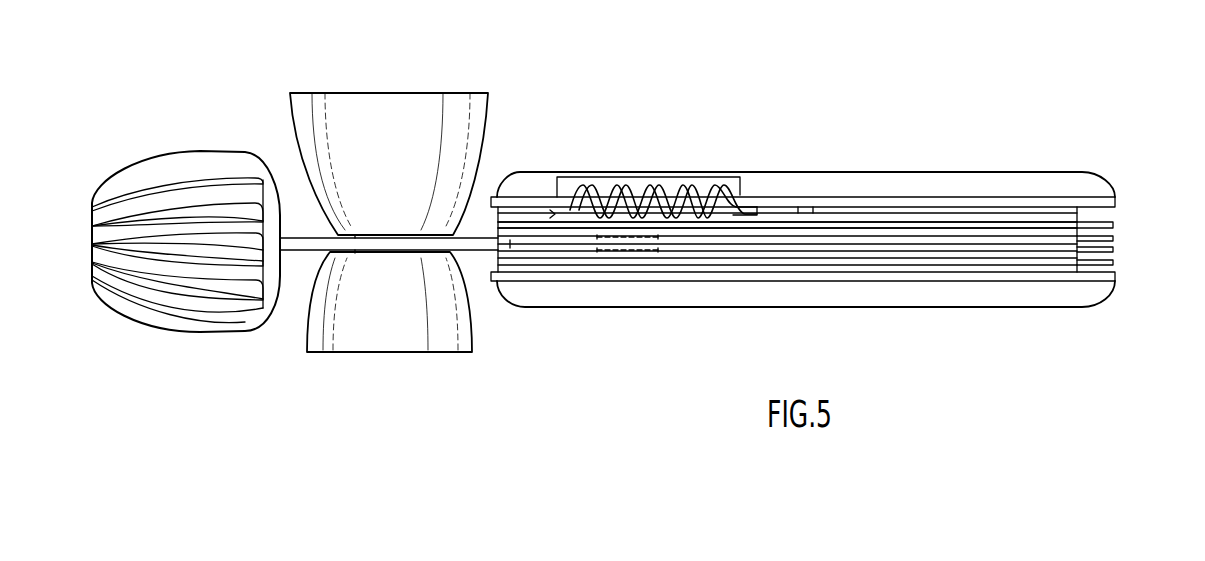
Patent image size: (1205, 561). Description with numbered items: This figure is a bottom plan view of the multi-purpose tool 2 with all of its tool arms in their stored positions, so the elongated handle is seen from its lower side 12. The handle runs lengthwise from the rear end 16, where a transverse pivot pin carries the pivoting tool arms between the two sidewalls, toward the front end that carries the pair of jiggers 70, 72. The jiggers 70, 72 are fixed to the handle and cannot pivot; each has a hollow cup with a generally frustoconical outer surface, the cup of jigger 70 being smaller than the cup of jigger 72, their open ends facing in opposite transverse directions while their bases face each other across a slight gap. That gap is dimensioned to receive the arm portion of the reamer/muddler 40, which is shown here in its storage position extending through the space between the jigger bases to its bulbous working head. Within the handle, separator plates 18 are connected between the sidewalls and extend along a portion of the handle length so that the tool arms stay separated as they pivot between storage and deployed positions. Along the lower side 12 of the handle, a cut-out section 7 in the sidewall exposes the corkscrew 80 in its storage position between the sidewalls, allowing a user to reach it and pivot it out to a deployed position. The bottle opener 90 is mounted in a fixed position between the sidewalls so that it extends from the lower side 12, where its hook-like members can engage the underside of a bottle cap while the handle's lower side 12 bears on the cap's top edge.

The multi-purpose tool 2 is at (817, 142).
The cut-out section 7 is at (675, 172).
The lower side 12 is at (943, 227).
The rear end 16 is at (1118, 202).
The separator plates 18 is at (1118, 242).
The reamer/muddler 40 is at (157, 160).
The jigger 70 is at (383, 342).
The jigger 72 is at (387, 112).
The corkscrew 80 is at (625, 197).
The bottle opener 90 is at (620, 250).